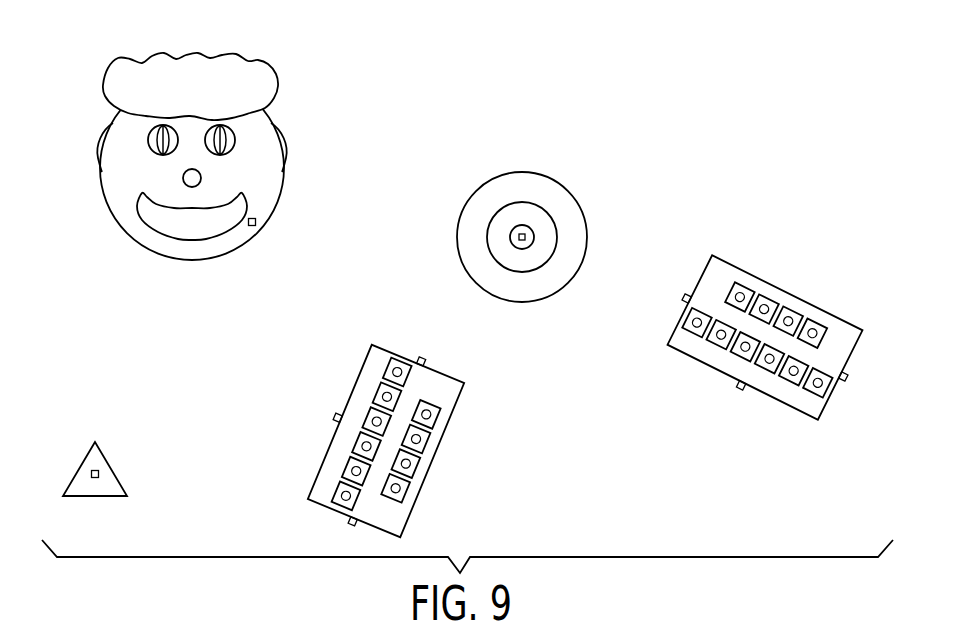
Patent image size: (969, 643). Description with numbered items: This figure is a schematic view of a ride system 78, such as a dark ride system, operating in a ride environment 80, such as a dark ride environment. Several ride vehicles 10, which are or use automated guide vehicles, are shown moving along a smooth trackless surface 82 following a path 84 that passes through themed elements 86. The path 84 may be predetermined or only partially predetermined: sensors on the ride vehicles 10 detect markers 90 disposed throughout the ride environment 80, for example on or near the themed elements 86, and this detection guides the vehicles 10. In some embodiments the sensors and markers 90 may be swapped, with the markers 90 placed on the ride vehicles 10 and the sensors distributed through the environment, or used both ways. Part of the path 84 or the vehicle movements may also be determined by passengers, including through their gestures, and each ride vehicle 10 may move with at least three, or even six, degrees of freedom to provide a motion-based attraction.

The ride vehicle 10 is at (576, 382).
The ride system 78 is at (607, 110).
The ride environment 80 is at (569, 47).
The smooth trackless surface 82 is at (558, 464).
The path 84 is at (298, 407).
The themed element 86 is at (262, 126).
The marker 90 is at (101, 472).